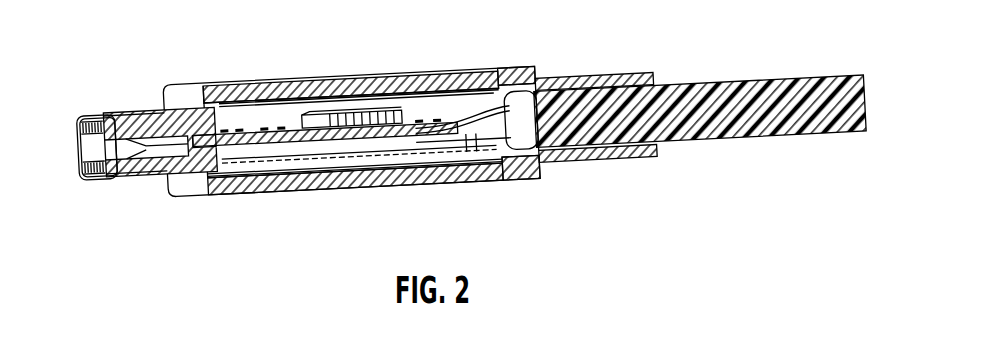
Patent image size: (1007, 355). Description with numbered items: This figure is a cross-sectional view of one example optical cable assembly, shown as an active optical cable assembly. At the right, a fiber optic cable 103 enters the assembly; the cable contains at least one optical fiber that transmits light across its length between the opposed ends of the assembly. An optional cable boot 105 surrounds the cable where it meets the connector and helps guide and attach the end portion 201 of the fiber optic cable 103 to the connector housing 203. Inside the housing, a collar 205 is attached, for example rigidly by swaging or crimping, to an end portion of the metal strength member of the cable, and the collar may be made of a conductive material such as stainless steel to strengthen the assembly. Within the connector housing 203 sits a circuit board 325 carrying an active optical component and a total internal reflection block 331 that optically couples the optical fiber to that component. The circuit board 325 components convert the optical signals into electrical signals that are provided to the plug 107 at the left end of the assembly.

The fiber optic cable 103 is at (713, 78).
The cable boot 105 is at (568, 77).
The plug 107 is at (103, 118).
The end portion 201 is at (598, 157).
The connector housing 203 is at (272, 183).
The collar 205 is at (497, 72).
The circuit board 325 is at (272, 137).
The total internal reflection block 331 is at (348, 116).